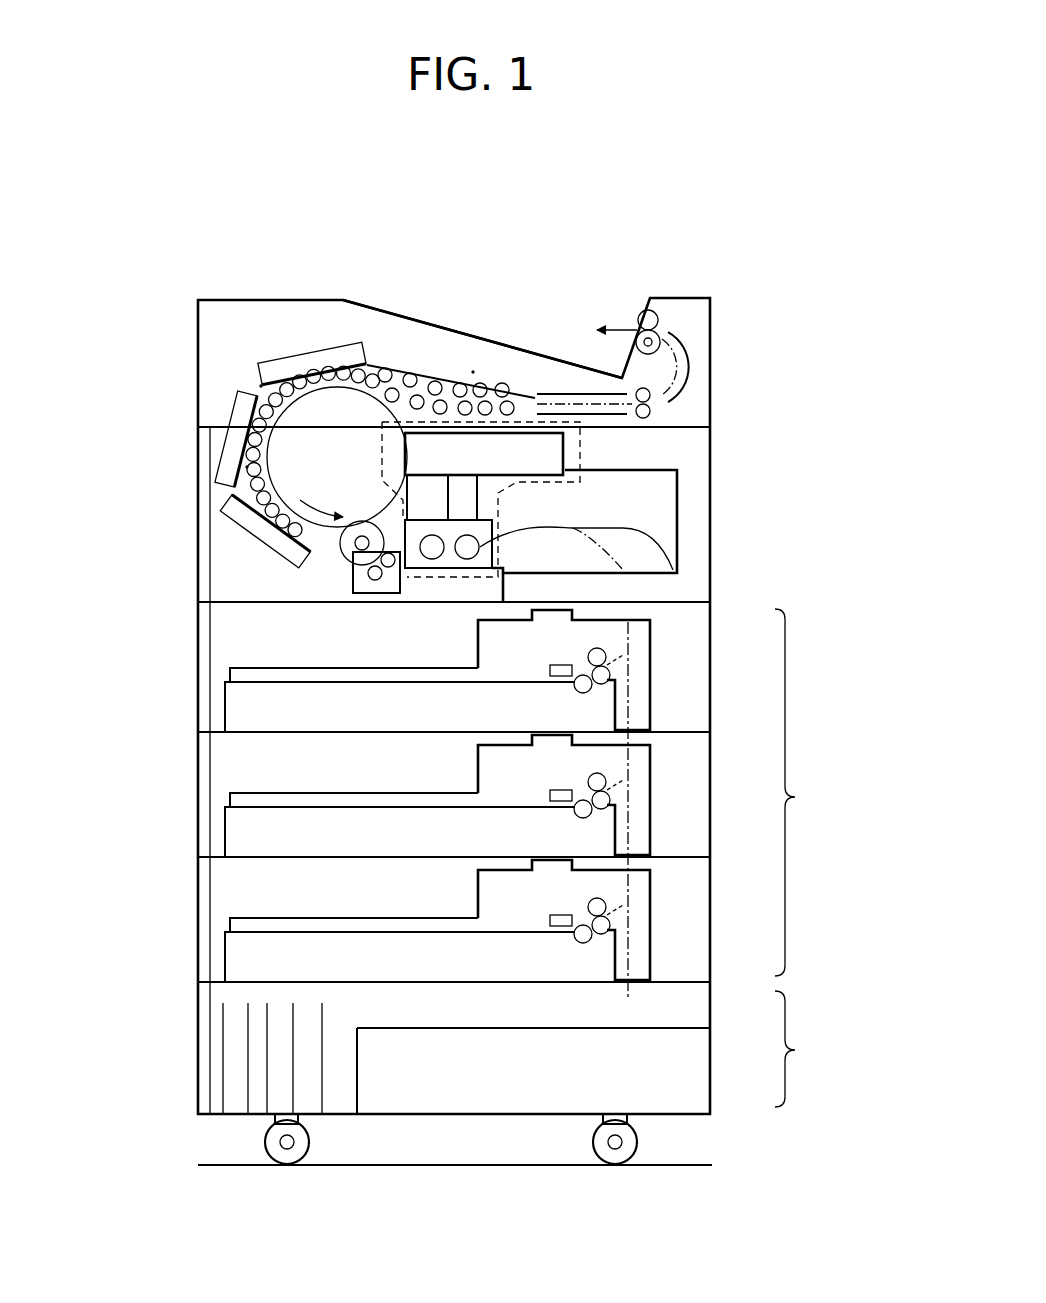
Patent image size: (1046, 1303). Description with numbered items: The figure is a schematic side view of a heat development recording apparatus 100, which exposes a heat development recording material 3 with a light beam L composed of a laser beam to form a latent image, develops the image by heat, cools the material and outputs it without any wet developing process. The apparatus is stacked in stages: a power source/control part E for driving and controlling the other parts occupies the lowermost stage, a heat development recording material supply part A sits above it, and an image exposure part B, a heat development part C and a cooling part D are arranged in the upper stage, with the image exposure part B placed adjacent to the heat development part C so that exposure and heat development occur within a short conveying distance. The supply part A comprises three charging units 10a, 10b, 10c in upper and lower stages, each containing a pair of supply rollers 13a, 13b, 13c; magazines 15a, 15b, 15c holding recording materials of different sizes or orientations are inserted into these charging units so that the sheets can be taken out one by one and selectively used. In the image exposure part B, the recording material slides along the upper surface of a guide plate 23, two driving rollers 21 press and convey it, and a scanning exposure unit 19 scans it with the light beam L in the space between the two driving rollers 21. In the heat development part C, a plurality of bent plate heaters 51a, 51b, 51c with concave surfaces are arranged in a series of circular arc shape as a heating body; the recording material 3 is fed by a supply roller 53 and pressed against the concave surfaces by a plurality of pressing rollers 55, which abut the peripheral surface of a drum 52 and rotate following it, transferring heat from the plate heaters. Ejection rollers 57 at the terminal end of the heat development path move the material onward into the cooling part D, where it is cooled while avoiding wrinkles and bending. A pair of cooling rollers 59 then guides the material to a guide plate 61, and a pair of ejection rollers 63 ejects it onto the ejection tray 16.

The heat development recording apparatus 100 is at (540, 207).
The heat development recording material 3 is at (427, 383).
The heat development part C is at (237, 360).
The plate heater 51a is at (240, 535).
The plate heater 51b is at (233, 403).
The plate heater 51c is at (310, 347).
The drum 52 is at (260, 384).
The supply roller 53 is at (333, 577).
The pressing rollers 55 is at (247, 467).
The ejection rollers 57 is at (402, 370).
The cooling rollers 59 is at (503, 384).
The cooling part D is at (473, 370).
The ejection tray 16 is at (548, 357).
The scanning exposure unit 19 is at (523, 418).
The guide plate 61 is at (570, 393).
The ejection rollers 63 is at (672, 307).
The light beam L is at (450, 513).
The image exposure part B is at (513, 528).
The driving rollers 21 is at (467, 558).
The guide plate 23 is at (413, 557).
The charging unit 10a is at (661, 685).
The charging unit 10b is at (661, 810).
The charging unit 10c is at (661, 935).
The supply rollers 13a is at (580, 658).
The supply rollers 13b is at (580, 783).
The supply rollers 13c is at (580, 908).
The magazine 15a is at (372, 702).
The magazine 15b is at (372, 827).
The magazine 15c is at (372, 952).
The heat development recording material supply part A is at (798, 792).
The power source/control part E is at (797, 1049).